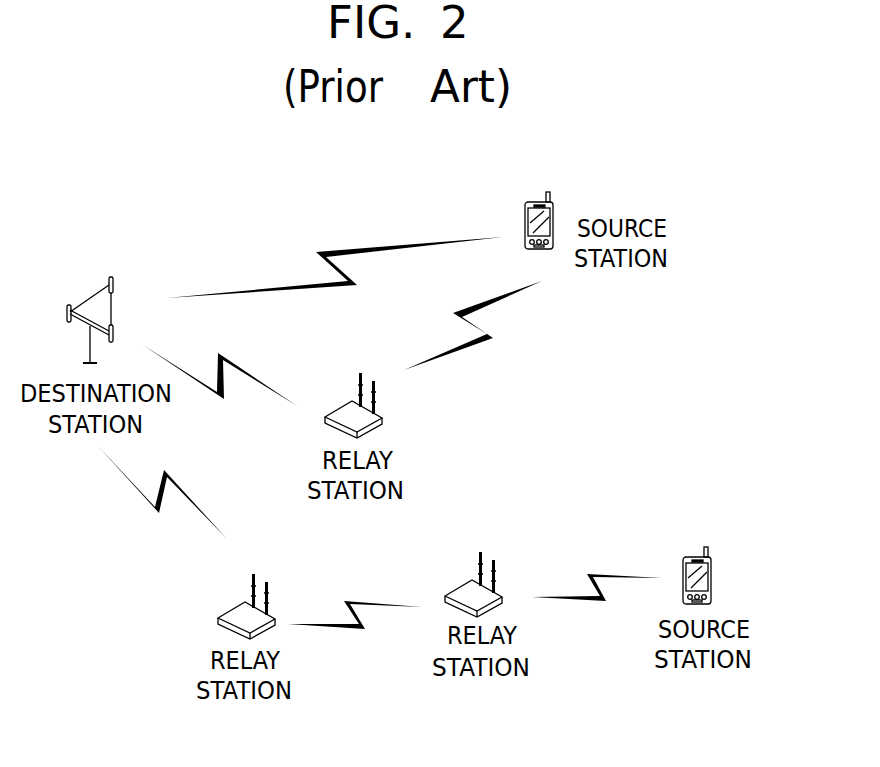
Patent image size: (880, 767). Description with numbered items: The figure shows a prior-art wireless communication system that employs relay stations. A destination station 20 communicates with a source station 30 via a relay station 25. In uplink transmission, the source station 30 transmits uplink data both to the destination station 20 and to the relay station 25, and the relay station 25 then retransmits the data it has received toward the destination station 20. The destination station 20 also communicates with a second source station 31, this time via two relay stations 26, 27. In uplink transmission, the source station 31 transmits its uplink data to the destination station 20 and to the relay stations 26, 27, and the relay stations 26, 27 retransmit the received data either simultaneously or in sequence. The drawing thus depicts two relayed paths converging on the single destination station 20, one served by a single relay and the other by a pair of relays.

The destination station 20 is at (102, 284).
The relay station 25 is at (347, 402).
The relay station 26 is at (237, 602).
The relay station 27 is at (463, 582).
The source station 30 is at (551, 206).
The source station 31 is at (732, 553).